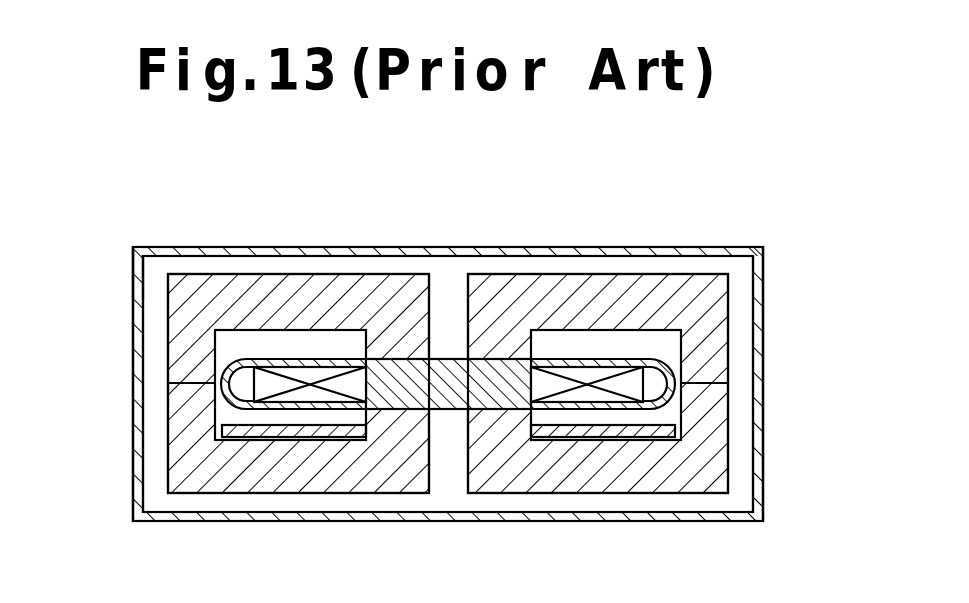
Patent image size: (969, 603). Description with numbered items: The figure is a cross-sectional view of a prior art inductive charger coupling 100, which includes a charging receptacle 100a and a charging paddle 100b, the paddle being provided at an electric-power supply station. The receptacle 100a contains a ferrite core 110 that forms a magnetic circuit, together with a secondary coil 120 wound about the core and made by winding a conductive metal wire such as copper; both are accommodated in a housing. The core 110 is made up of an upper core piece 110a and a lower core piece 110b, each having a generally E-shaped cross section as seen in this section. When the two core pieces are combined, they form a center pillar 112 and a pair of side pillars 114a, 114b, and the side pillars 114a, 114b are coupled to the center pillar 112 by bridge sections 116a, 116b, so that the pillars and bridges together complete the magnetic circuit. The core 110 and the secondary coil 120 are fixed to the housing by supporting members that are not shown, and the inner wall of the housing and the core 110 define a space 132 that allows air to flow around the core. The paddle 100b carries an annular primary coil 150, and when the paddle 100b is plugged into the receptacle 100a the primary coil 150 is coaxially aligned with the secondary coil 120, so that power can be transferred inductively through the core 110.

The inductive charger coupling 100 is at (726, 236).
The charging receptacle 100a is at (118, 254).
The charging paddle 100b is at (256, 349).
The ferrite core 110 is at (505, 275).
The upper core piece 110a is at (715, 277).
The lower core piece 110b is at (507, 498).
The center pillar 112 is at (410, 455).
The side pillar 114a is at (710, 353).
The side pillar 114b is at (197, 370).
The bridge section 116a is at (633, 285).
The bridge section 116b is at (283, 307).
The secondary coil 120 is at (246, 424).
The space 132 is at (158, 338).
The primary coil 150 is at (330, 373).